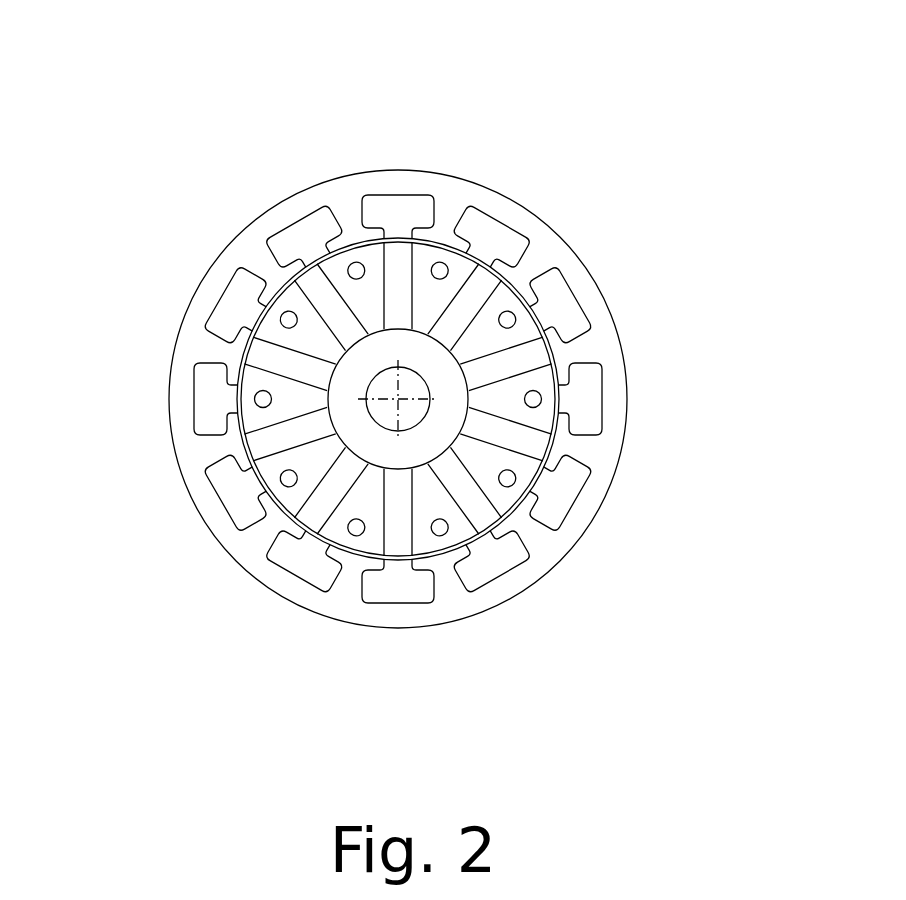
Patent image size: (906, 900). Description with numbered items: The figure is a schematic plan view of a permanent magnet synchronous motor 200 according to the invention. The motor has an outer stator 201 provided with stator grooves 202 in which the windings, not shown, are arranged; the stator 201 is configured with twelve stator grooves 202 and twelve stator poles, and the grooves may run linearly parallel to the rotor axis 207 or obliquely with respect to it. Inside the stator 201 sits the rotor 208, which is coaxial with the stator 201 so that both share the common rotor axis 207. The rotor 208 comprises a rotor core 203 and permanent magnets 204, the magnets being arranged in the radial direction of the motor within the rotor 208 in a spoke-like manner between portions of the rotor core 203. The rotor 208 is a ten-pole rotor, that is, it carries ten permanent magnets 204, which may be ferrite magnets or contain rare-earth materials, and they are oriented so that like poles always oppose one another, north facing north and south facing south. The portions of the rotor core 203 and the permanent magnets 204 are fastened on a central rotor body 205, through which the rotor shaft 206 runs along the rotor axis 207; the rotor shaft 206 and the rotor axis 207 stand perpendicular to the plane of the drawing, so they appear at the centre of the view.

The permanent magnet synchronous motor 200 is at (435, 133).
The stator 201 is at (552, 250).
The stator grooves 202 is at (567, 305).
The rotor core 203 is at (527, 382).
The permanent magnets 204 is at (518, 437).
The rotor hub 205 is at (414, 345).
The rotor shaft 206 is at (390, 367).
The rotor axis 207 is at (397, 397).
The rotor 208 is at (397, 580).